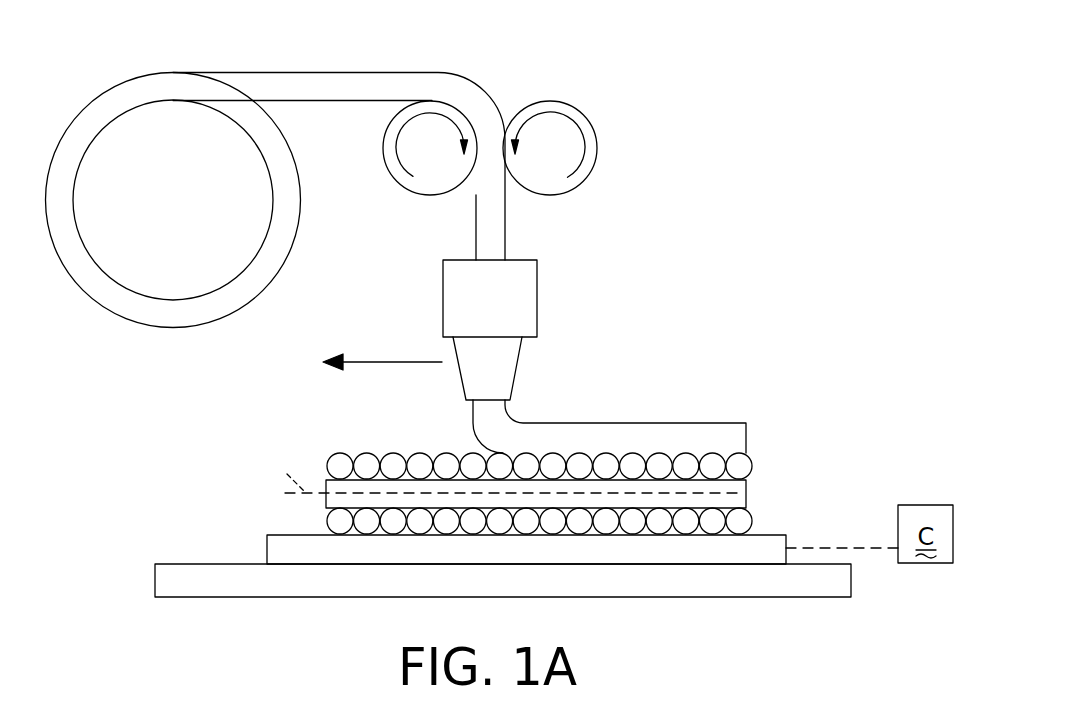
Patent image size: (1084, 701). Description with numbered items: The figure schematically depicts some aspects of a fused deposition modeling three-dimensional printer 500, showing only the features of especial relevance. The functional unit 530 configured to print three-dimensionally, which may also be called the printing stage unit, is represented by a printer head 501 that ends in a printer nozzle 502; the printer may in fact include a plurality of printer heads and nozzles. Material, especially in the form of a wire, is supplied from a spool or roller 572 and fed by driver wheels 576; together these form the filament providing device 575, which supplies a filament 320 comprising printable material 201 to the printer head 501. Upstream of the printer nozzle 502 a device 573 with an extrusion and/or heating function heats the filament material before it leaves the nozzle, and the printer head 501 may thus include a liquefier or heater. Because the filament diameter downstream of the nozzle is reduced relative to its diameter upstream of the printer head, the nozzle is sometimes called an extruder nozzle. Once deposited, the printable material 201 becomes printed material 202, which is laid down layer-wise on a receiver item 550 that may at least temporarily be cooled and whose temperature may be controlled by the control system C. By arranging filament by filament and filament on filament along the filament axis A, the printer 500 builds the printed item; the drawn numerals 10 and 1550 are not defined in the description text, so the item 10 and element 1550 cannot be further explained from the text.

The 3D printer 500 is at (793, 232).
The spool or roller 572 is at (100, 56).
The extrusion and/or heating device 573 is at (582, 220).
The driver wheels 576 is at (500, 64).
The filament providing device 575 is at (622, 96).
The printer head 501 is at (523, 305).
The printer nozzle 502 is at (447, 410).
The functional unit configured to 3D print 530 is at (140, 374).
The workpiece 10 is at (823, 442).
The printed material 202 is at (717, 432).
The printable material 201 is at (506, 418).
The filament 320 is at (722, 497).
The substrate 1550 is at (227, 506).
The receiver item 550 is at (232, 551).